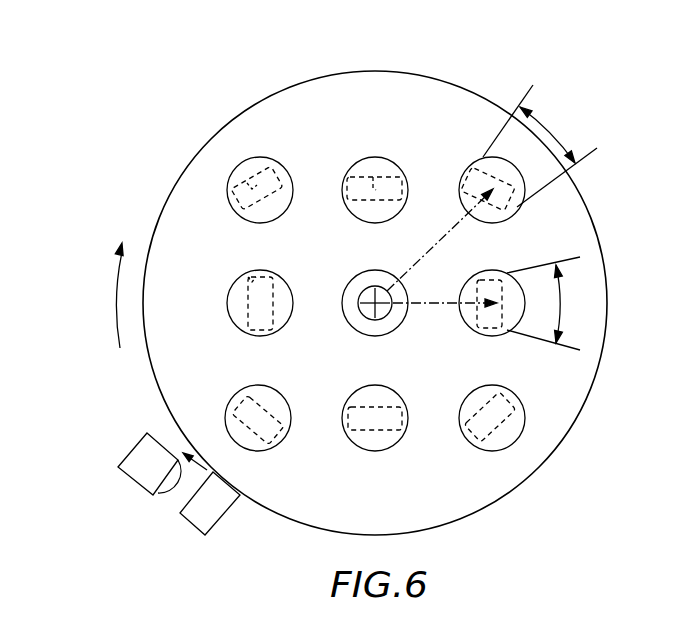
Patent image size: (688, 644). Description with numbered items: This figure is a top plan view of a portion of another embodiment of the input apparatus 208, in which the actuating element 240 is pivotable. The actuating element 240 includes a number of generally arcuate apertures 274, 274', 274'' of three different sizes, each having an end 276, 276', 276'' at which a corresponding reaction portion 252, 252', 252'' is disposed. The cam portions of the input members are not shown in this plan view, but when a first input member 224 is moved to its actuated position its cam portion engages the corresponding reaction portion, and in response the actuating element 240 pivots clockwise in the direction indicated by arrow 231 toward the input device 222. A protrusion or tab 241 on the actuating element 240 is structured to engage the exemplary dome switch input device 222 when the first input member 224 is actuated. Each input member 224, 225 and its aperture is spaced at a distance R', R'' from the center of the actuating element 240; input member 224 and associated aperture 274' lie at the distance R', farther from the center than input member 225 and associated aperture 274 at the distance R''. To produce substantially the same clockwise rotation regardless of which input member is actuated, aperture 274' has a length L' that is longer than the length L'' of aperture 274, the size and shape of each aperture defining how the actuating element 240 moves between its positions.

The actuating element 240 is at (355, 88).
The input apparatus 208 is at (573, 511).
The arrow 231 is at (113, 288).
The reaction portion 252' is at (235, 156).
The aperture 274' is at (233, 188).
The end 276' is at (300, 141).
The aperture 274'' is at (377, 166).
The end 276'' is at (417, 155).
The reaction portion 252'' is at (449, 158).
The first input member 224 is at (490, 218).
The length L' is at (540, 146).
The distance R' is at (440, 240).
The reaction portion 252 is at (235, 278).
The aperture 274 is at (370, 329).
The end 276 is at (208, 291).
The input member 225 is at (468, 292).
The distance R'' is at (445, 325).
The length L'' is at (553, 303).
The input device 222 is at (178, 493).
The tab 241 is at (217, 503).